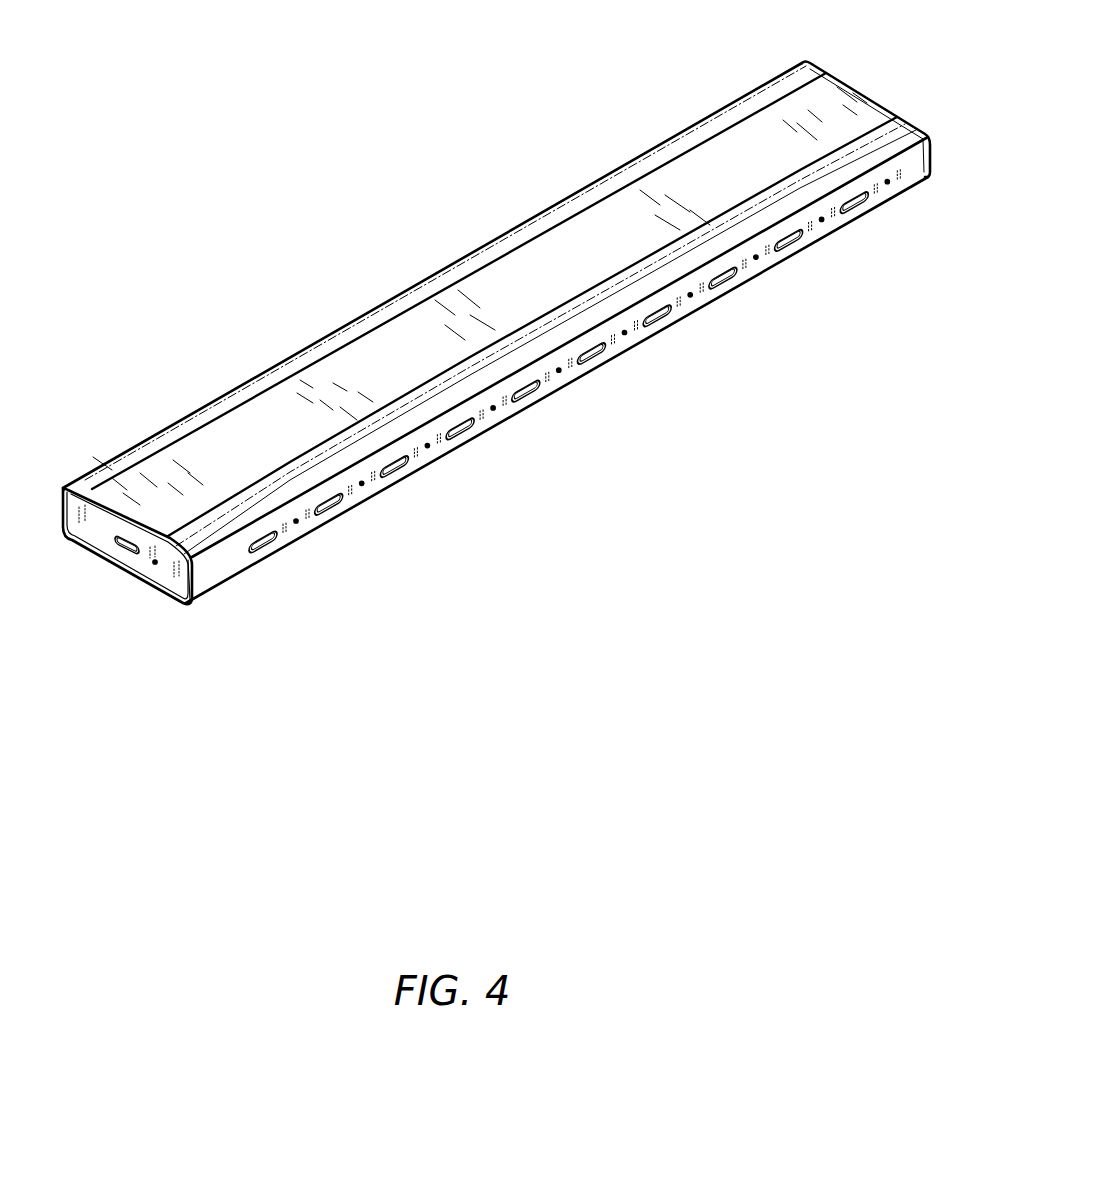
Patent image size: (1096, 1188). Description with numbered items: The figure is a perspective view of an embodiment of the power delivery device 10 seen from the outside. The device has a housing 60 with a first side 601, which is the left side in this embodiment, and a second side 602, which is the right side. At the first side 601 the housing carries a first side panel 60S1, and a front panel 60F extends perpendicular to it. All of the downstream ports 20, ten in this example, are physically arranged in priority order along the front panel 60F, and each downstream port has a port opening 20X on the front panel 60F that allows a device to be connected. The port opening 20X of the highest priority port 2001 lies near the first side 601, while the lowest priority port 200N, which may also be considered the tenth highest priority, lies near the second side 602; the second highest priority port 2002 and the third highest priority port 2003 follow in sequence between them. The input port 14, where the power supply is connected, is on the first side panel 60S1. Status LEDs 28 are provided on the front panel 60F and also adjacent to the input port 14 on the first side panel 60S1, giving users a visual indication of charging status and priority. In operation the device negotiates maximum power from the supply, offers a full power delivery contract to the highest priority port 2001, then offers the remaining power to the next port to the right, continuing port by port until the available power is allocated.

The power delivery device 10 is at (247, 654).
The input port 14 is at (128, 556).
The downstream ports 20 is at (387, 461).
The highest priority port 2001 is at (268, 556).
The second highest priority port 2002 is at (335, 512).
The third highest priority port 2003 is at (400, 475).
The lowest priority port 200N is at (850, 212).
The port opening 20X is at (278, 551).
The status LEDs 28 is at (492, 405).
The housing 60 is at (114, 456).
The first side 601 is at (87, 531).
The second side 602 is at (840, 73).
The front panel 60F is at (677, 316).
The first side panel 60S1 is at (168, 577).